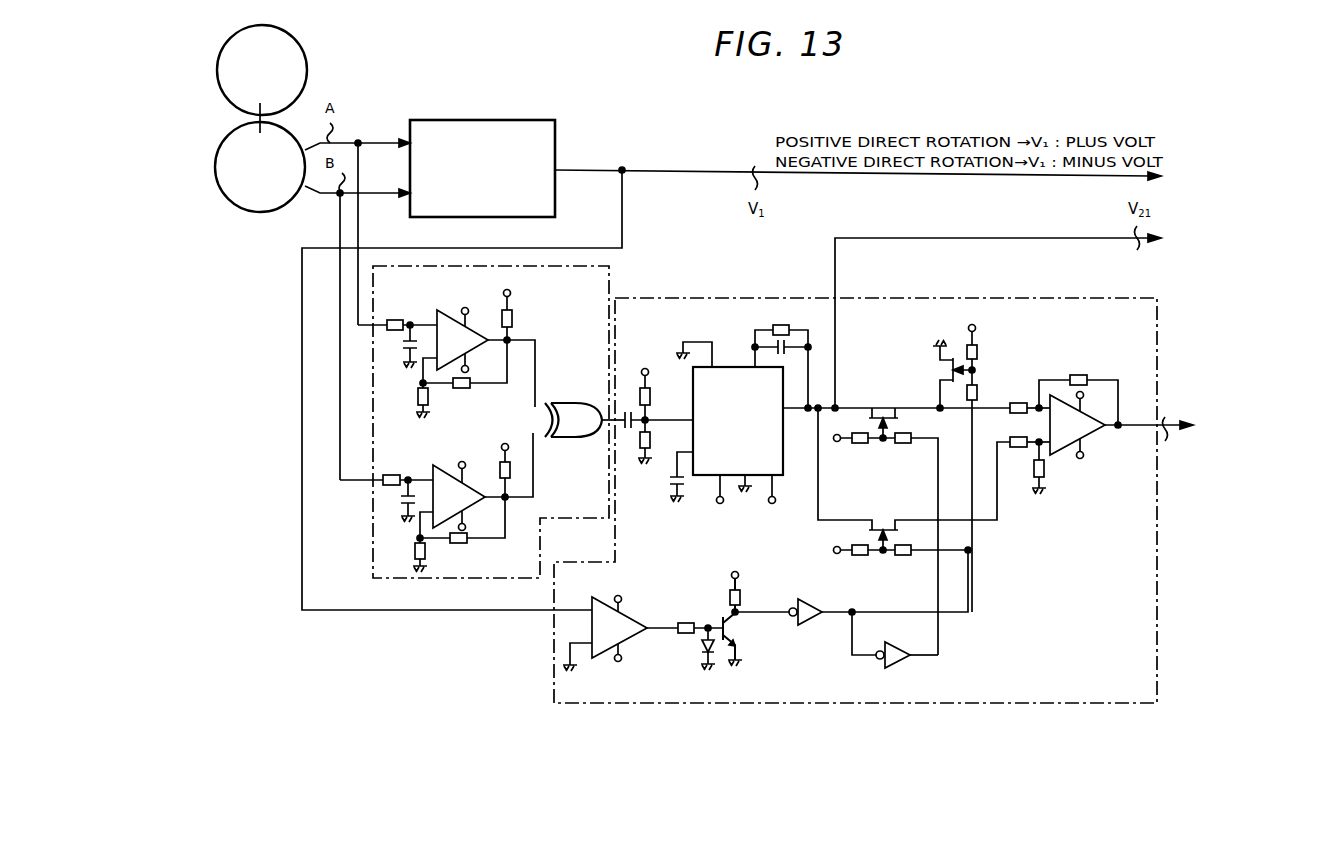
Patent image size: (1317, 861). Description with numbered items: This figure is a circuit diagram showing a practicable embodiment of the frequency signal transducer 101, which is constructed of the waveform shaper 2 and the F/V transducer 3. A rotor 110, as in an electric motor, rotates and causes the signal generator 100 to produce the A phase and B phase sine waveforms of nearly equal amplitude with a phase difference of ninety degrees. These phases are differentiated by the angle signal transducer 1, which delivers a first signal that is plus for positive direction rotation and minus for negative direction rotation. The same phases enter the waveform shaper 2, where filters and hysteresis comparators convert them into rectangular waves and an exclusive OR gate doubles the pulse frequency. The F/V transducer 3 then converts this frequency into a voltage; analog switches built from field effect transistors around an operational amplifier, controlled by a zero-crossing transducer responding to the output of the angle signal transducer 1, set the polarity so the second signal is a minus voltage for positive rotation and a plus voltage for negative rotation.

The rotor 110 is at (308, 72).
The signal generator 100 is at (237, 207).
The angle signal transducer 1 is at (514, 120).
The waveform shaper 2 is at (611, 275).
The F/V transducer 3 is at (922, 302).
The frequency signal transducer 101 is at (418, 595).